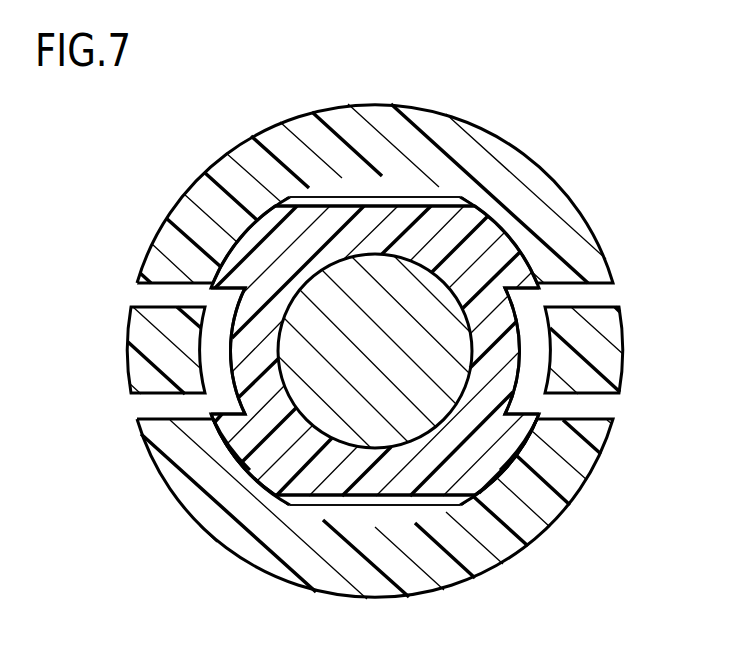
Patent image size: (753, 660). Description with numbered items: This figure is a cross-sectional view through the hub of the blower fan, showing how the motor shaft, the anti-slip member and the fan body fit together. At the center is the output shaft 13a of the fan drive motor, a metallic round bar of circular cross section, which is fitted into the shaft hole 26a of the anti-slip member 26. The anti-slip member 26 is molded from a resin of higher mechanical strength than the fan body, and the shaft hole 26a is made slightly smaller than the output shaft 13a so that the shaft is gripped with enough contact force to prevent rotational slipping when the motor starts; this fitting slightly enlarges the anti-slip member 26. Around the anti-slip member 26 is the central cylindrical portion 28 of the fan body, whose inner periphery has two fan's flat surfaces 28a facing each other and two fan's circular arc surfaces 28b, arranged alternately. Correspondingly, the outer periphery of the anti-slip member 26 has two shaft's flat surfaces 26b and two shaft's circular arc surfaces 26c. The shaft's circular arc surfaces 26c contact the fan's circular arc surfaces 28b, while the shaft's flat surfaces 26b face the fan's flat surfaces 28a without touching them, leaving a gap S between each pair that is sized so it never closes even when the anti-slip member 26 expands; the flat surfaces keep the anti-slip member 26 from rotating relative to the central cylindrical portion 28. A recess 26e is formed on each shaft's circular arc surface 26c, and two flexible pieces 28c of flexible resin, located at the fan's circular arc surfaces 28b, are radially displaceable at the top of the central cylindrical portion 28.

The output shaft 13a is at (427, 312).
The anti-slip member 26 is at (506, 248).
The shaft hole 26a is at (503, 503).
The shaft's flat surface 26b is at (423, 205).
The shaft's circular arc surface 26c is at (268, 472).
The recess 26e is at (230, 322).
The central cylindrical portion 28 is at (503, 177).
The fan's flat surface 28a is at (367, 203).
The fan's circular arc surface 28b is at (228, 427).
The flexible piece 28c is at (150, 347).
The gap S is at (323, 200).